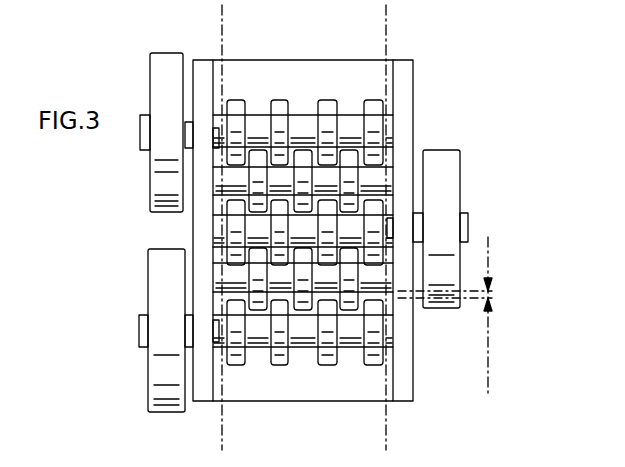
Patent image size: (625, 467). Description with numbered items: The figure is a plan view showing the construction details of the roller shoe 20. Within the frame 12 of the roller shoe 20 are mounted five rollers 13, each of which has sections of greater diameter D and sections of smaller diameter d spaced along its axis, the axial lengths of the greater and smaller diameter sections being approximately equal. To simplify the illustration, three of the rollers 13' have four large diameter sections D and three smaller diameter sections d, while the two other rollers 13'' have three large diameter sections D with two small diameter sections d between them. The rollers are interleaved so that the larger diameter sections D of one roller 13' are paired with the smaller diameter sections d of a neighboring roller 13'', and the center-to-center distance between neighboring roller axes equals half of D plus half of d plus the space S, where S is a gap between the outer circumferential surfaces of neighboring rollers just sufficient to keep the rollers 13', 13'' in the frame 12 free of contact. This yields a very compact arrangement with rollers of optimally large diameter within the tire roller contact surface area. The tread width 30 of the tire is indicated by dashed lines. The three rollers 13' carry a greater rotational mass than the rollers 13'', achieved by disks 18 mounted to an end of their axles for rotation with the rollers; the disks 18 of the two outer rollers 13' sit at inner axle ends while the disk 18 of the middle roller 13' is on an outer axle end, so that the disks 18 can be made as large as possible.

The frame 12 is at (402, 95).
The rollers 13 is at (323, 275).
The rollers with four large diameter sections 13' is at (283, 232).
The rollers with three large diameter sections 13'' is at (373, 230).
The disks 18 is at (168, 176).
The roller shoe 20 is at (446, 384).
The tread width 30 is at (220, 23).
The greater diameter D is at (327, 99).
The smaller diameter d is at (257, 123).
The space S is at (455, 317).